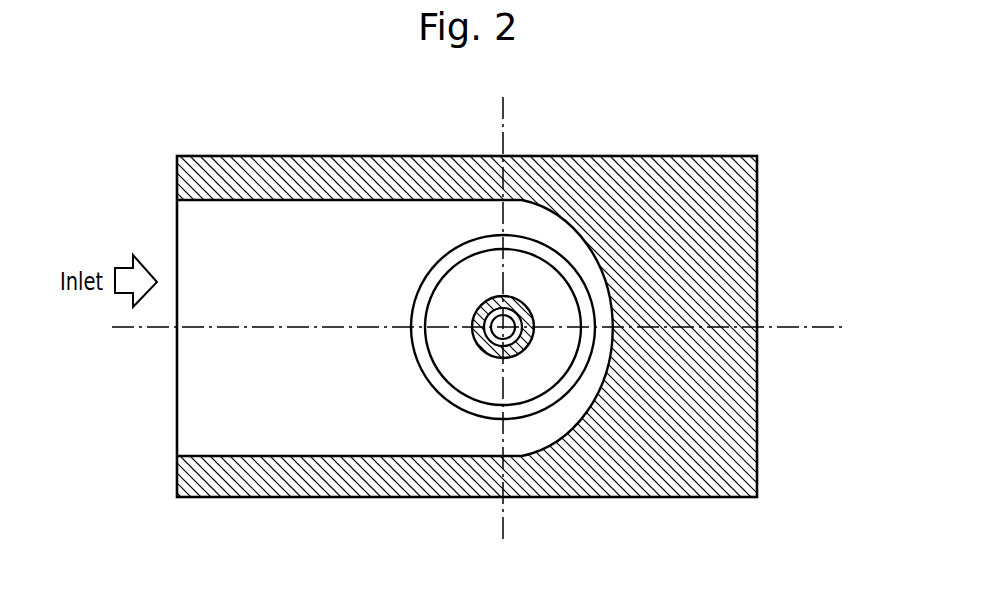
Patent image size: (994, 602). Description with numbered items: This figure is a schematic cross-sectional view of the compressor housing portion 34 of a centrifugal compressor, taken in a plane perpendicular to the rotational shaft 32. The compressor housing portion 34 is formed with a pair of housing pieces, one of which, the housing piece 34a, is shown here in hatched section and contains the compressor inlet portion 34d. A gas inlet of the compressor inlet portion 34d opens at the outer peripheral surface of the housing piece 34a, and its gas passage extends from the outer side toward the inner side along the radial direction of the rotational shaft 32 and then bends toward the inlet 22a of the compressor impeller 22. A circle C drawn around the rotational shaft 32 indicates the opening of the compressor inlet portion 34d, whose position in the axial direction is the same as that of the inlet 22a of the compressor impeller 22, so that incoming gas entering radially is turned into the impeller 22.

The compressor housing portion 34 is at (803, 182).
The housing piece 34a is at (698, 217).
The compressor inlet portion 34d is at (227, 382).
The rotational shaft 32 is at (509, 298).
The compressor impeller 22 is at (543, 375).
The inlet 22a is at (457, 383).
The circle C is at (423, 377).